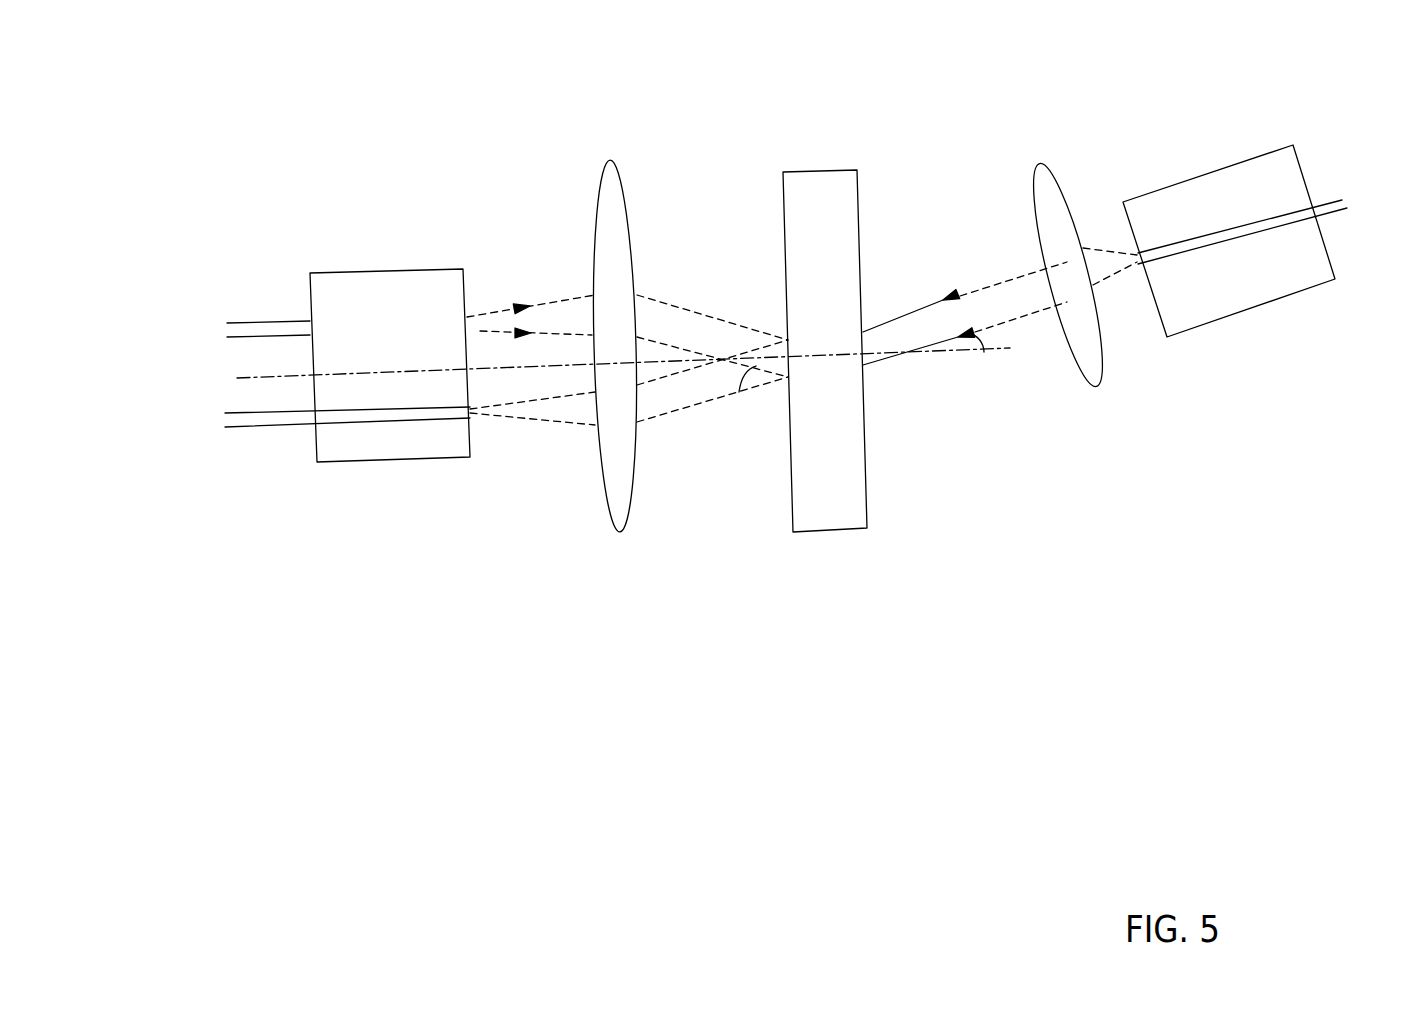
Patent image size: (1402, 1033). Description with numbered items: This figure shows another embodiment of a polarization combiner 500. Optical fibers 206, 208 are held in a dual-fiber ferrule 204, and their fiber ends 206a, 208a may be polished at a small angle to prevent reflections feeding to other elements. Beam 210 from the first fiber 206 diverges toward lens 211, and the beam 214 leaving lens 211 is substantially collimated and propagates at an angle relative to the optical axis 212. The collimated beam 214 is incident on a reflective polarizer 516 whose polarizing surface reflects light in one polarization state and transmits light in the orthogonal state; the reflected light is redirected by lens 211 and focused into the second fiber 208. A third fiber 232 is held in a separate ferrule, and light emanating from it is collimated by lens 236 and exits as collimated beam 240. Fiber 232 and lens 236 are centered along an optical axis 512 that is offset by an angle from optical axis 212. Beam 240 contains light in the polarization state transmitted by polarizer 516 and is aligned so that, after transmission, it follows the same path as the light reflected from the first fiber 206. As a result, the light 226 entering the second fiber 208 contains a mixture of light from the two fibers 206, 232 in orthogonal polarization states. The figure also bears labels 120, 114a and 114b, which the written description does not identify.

The polarization combiner 500 is at (218, 229).
The dual-fiber ferrule 204 is at (380, 462).
The first fiber 206 is at (243, 337).
The fiber end 206a is at (474, 252).
The second fiber 208 is at (255, 427).
The fiber end 208a is at (417, 545).
The light entering the second fiber 226 is at (538, 422).
The optical axis 212 is at (262, 377).
The beam 210 is at (552, 303).
The lens 211 is at (610, 160).
The light beam 120 is at (658, 303).
The beam 214 is at (719, 322).
The first light beam 114a is at (668, 415).
The second light beam 114b is at (737, 392).
The reflective polarizer 516 is at (820, 172).
The collimated beam 240 is at (947, 302).
The lens 236 is at (1095, 395).
The optical axis 512 is at (1268, 300).
The third fiber 232 is at (1332, 195).